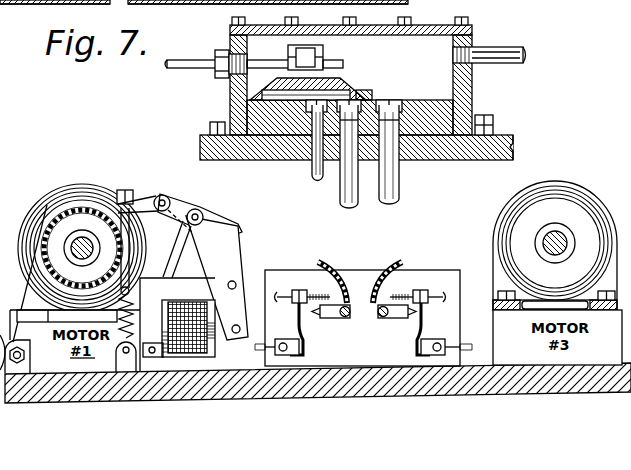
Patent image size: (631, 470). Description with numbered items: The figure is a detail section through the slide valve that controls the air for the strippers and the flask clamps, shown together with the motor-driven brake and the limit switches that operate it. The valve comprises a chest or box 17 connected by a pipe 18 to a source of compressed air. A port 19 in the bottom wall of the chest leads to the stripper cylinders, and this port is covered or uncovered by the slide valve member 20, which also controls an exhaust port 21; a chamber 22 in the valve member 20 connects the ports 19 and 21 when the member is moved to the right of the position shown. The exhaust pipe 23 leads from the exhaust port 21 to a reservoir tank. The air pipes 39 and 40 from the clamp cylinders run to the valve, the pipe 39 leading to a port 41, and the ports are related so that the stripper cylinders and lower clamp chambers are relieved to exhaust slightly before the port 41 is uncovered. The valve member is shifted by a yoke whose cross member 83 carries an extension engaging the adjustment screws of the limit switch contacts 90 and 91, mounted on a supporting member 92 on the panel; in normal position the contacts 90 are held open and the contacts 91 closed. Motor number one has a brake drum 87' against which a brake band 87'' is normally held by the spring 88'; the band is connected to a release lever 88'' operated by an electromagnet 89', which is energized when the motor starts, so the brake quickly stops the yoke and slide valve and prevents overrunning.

The chest or box 17 is at (444, 17).
The pipe 18 is at (516, 37).
The port 19 is at (392, 100).
The slide valve member 20 is at (353, 95).
The exhaust port 21 is at (368, 99).
The chamber 22 is at (341, 83).
The exhaust pipe 23 is at (347, 187).
The air pipe 39 is at (312, 178).
The air pipe 40 is at (393, 172).
The port 41 is at (302, 108).
The cross member 83 is at (323, 292).
The brake drum 87' is at (63, 216).
The brake band 87'' is at (117, 230).
The spring 88' is at (110, 361).
The release lever 88'' is at (203, 264).
The electromagnet 89' is at (192, 362).
The limit switch contacts 90 is at (307, 325).
The limit switch contacts 91 is at (417, 325).
The supporting member 92 is at (363, 281).